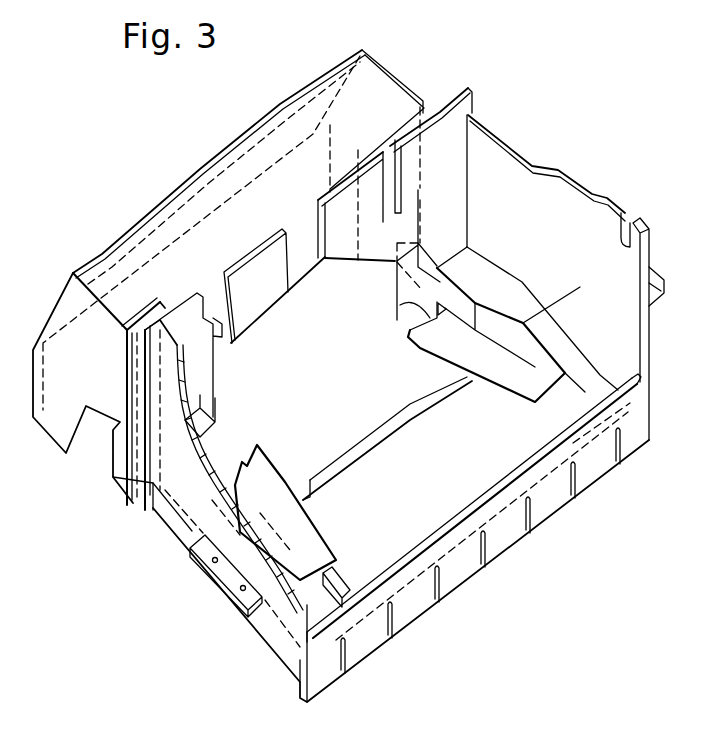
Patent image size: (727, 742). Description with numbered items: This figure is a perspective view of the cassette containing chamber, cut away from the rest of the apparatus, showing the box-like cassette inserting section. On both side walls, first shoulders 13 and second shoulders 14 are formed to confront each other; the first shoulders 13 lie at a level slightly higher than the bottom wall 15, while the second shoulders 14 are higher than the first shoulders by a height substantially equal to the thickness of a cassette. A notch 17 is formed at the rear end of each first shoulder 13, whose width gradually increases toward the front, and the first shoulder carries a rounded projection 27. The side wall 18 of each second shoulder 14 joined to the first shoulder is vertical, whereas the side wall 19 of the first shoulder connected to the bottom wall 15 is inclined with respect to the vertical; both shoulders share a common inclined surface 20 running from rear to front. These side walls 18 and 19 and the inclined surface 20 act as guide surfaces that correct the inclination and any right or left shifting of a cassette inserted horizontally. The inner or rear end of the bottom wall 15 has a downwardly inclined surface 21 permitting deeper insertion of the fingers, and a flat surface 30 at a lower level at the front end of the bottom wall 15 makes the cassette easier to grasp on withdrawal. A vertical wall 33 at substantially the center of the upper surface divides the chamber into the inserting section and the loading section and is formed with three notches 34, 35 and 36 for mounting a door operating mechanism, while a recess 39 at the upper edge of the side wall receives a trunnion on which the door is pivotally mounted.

The first shoulder 13 is at (497, 363).
The second shoulder 14 is at (515, 290).
The bottom wall 15 is at (455, 492).
The notch 17 is at (400, 308).
The side wall of second shoulder 18 is at (487, 313).
The side wall of first shoulder 19 is at (440, 373).
The inclined surface 20 is at (560, 332).
The downwardly inclined surface 21 is at (605, 380).
The projection 27 is at (413, 330).
The flat surface 30 is at (332, 600).
The vertical wall 33 is at (255, 267).
The notch 34 is at (208, 292).
The notch 35 is at (302, 222).
The notch 36 is at (388, 150).
The recess 39 is at (632, 215).